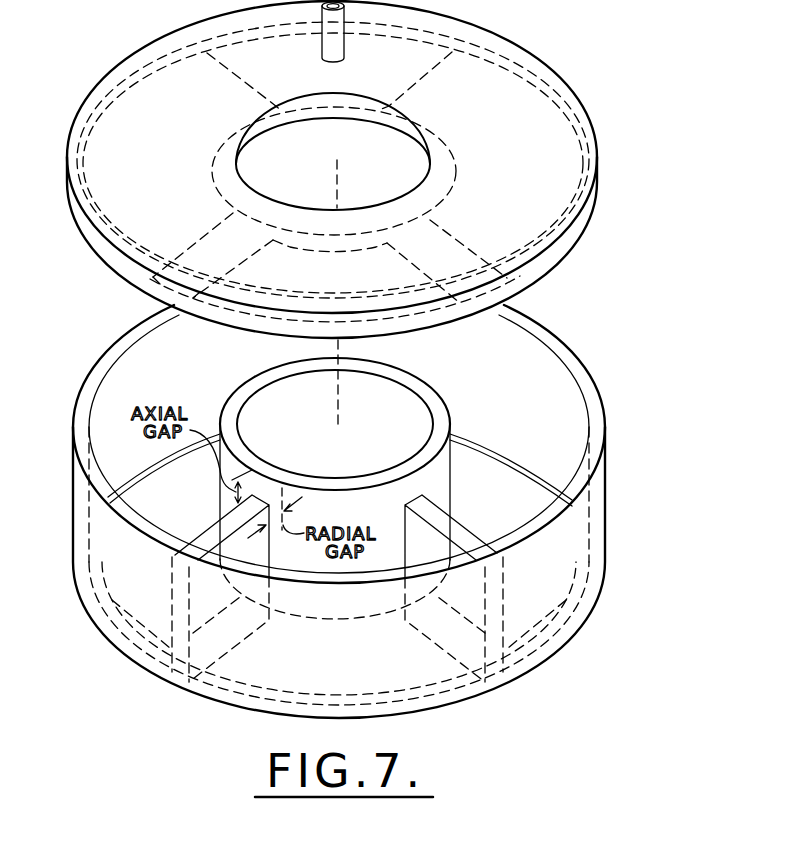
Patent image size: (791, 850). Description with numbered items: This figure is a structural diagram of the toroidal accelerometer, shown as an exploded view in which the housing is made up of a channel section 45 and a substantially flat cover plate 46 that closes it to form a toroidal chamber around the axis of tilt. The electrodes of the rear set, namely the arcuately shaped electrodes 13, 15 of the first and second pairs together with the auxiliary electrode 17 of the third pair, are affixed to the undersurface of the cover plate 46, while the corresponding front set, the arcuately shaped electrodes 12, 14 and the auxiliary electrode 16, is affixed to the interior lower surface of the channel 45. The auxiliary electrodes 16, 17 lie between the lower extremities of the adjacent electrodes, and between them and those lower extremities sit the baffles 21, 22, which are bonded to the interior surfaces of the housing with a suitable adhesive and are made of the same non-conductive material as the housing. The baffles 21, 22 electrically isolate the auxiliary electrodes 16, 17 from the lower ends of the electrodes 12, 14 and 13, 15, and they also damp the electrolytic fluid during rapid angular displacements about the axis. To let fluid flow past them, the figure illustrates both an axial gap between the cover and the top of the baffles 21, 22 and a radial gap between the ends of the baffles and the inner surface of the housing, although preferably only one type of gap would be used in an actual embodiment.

The cover plate 46 is at (124, 62).
The arcuately shaped electrode 13 is at (110, 252).
The arcuately shaped electrode 15 is at (558, 220).
The auxiliary electrode 17 is at (168, 298).
The channel section 45 is at (74, 386).
The arcuately shaped electrode 12 is at (153, 492).
The arcuately shaped electrode 14 is at (475, 457).
The baffle 21 is at (215, 541).
The baffle 22 is at (467, 533).
The auxiliary electrode 16 is at (262, 672).